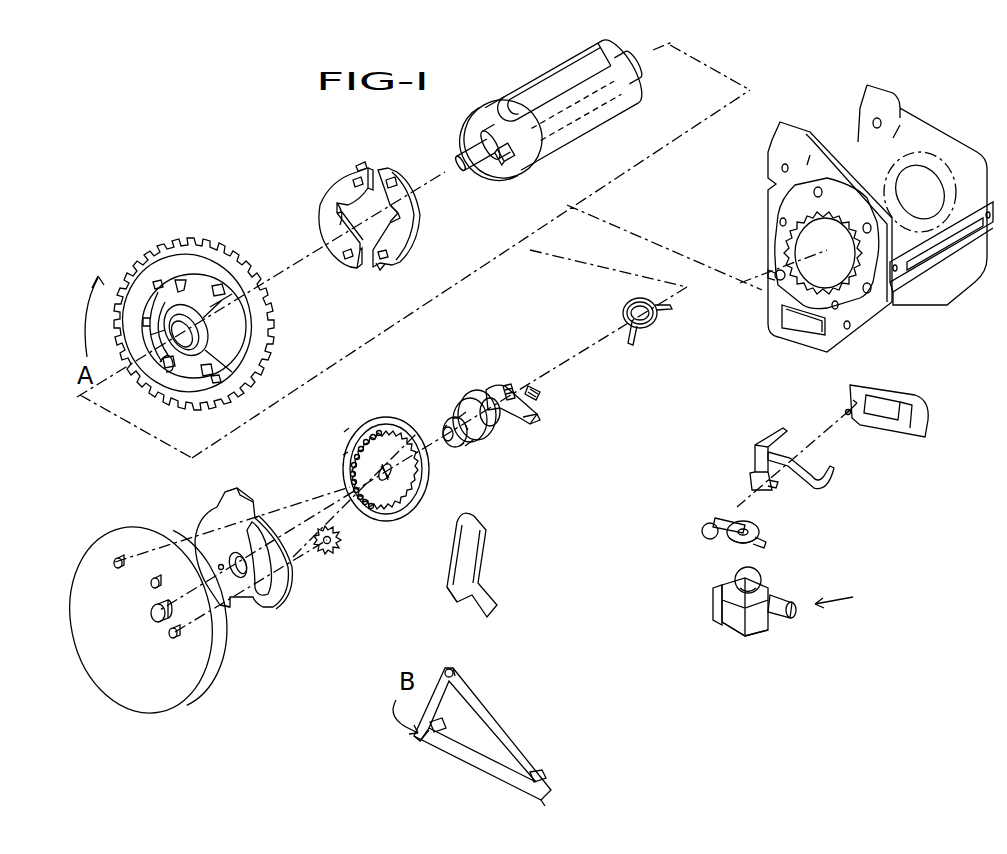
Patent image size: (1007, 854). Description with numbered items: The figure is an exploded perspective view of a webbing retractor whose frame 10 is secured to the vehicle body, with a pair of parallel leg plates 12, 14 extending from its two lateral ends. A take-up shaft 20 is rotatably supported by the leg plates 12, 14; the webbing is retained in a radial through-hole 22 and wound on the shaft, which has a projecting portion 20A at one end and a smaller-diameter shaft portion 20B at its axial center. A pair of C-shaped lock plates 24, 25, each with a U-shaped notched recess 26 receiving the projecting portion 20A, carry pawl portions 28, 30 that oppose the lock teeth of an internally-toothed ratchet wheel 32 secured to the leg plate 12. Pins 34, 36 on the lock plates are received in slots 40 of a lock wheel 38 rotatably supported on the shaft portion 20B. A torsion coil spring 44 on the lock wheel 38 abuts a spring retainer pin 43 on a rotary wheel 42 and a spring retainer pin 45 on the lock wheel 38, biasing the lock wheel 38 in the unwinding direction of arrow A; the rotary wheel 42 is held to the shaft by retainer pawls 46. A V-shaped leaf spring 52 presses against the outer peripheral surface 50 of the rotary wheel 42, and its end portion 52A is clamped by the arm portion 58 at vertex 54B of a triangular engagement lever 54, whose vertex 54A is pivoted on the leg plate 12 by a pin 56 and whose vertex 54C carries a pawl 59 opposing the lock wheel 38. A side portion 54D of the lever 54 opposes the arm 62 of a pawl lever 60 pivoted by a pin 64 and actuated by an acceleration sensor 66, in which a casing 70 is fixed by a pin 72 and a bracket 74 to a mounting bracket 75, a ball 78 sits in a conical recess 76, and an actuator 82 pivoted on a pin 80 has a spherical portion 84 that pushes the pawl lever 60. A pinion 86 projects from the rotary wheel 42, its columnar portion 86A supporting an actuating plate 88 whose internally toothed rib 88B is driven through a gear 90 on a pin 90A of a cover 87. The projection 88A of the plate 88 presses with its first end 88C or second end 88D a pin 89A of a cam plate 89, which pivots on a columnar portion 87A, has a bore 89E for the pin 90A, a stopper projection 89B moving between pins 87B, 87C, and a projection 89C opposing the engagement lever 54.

The frame 10 is at (860, 218).
The leg plate 12 is at (821, 237).
The leg plate 14 is at (952, 292).
The take-up shaft 20 is at (556, 120).
The projecting portion 20A is at (518, 165).
The smaller-diameter shaft portion 20B is at (496, 172).
The through-hole 22 is at (500, 95).
The lock plate 24 is at (373, 210).
The lock plate 25 is at (422, 217).
The notched recess 26 is at (337, 203).
The pawl portion 28 is at (356, 165).
The pawl portion 30 is at (382, 270).
The internally-toothed ratchet wheel 32 is at (780, 225).
The pins 34 is at (353, 180).
The pins 36 is at (392, 178).
The lock wheel 38 is at (191, 327).
The slots 40 is at (180, 280).
The rotary wheel 42 is at (518, 403).
The spring retainer pin 43 is at (535, 420).
The torsion coil spring 44 is at (633, 300).
The spring retainer pin 45 is at (165, 368).
The retainer pawls 46 is at (510, 385).
The outer peripheral surface 50 is at (490, 422).
The leaf spring 52 is at (458, 560).
The end portion 52A is at (448, 604).
The engagement lever 54 is at (493, 715).
The vertex 54A is at (420, 741).
The vertex 54B is at (454, 670).
The vertex 54C is at (546, 796).
The side portion 54D is at (466, 762).
The pin 56 is at (450, 730).
The arm portion 58 is at (447, 668).
The pawl 59 is at (545, 775).
The pawl lever 60 is at (803, 462).
The arm 62 is at (775, 432).
The pin 64 is at (848, 400).
The acceleration sensor 66 is at (812, 509).
The casing 70 is at (750, 636).
The pin 72 is at (795, 612).
The bracket 74 is at (762, 580).
The mounting bracket 75 is at (915, 390).
The conical recess 76 is at (728, 628).
The ball 78 is at (714, 595).
The pin 80 is at (708, 540).
The actuator 82 is at (752, 530).
The spherical portion 84 is at (716, 518).
The pinion 86 is at (449, 419).
The columnar portion 86A is at (468, 400).
The cover 87 is at (148, 620).
The columnar portion 87A is at (151, 612).
The pin 87B is at (118, 558).
The pin 87C is at (155, 578).
The actuating plate 88 is at (359, 477).
The projection 88A is at (337, 458).
The rib 88B is at (418, 420).
The first end 88C is at (362, 420).
The second end 88D is at (383, 482).
The cam plate 89 is at (272, 565).
The pin 89A is at (247, 550).
The projection 89B is at (243, 486).
The projection 89C is at (228, 608).
The bore 89E is at (286, 585).
The gear 90 is at (338, 551).
The pin 90A is at (175, 640).